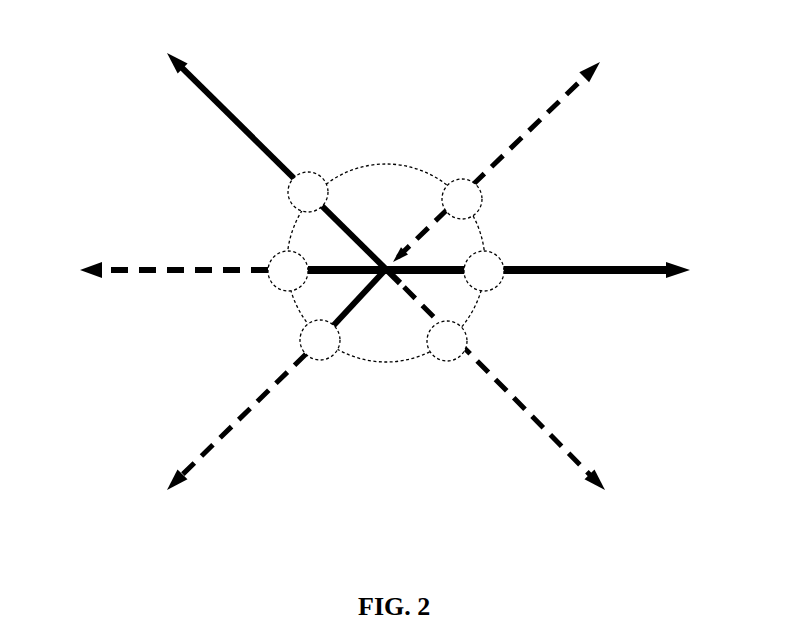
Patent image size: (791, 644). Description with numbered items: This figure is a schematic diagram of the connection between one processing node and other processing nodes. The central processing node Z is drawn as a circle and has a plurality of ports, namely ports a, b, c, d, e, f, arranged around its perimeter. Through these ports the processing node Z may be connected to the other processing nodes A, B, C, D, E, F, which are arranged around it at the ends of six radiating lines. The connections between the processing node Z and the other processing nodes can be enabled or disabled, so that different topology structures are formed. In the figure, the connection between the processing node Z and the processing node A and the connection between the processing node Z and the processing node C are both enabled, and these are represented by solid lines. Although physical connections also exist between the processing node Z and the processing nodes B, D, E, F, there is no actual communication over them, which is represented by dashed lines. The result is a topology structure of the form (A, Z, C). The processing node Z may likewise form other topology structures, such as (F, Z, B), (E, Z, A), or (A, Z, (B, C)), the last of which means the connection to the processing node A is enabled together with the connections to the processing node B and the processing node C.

The processing node A is at (253, 152).
The processing node B is at (528, 141).
The processing node C is at (528, 256).
The processing node D is at (541, 416).
The processing node E is at (256, 401).
The processing node F is at (148, 264).
The processing node Z is at (386, 263).
The port a is at (308, 192).
The port b is at (462, 199).
The port c is at (484, 271).
The port d is at (447, 341).
The port e is at (320, 340).
The port f is at (288, 271).